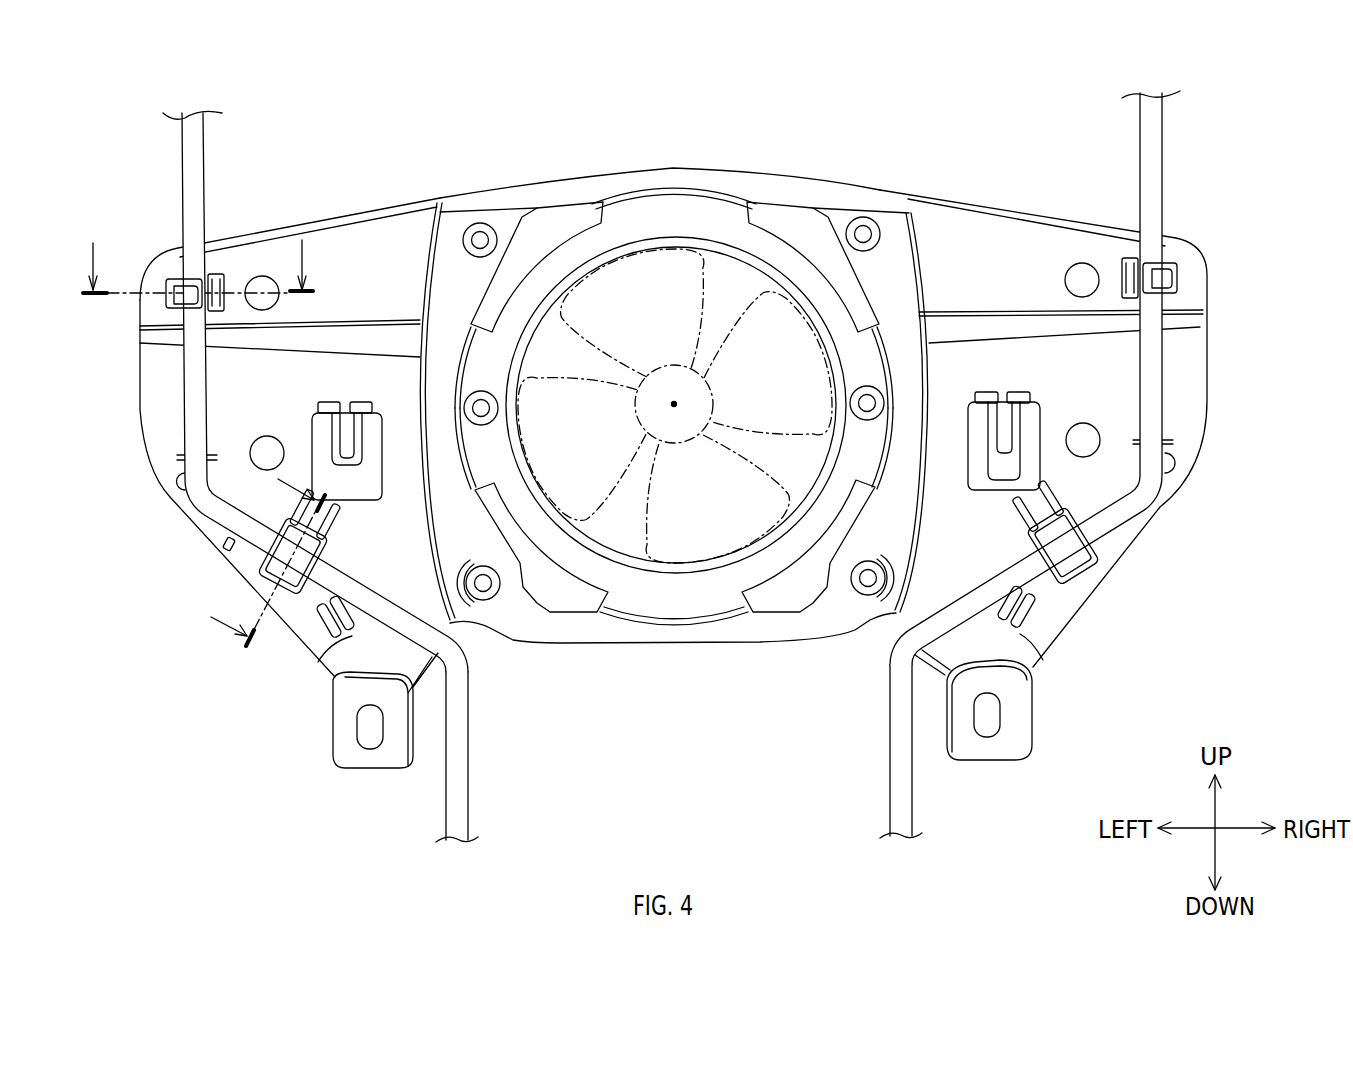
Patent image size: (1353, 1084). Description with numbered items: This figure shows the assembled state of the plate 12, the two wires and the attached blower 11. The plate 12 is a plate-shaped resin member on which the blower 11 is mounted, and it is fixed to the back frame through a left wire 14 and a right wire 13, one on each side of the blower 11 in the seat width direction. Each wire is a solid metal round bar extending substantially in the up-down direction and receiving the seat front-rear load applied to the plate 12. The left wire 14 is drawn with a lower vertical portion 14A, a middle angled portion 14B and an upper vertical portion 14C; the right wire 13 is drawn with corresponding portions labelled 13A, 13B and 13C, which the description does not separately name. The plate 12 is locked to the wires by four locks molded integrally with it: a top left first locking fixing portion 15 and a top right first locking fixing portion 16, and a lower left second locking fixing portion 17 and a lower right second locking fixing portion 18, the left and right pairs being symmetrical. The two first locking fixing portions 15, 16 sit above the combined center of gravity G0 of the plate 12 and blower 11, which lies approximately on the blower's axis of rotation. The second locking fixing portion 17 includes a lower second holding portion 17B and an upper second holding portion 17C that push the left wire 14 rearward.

The blower 11 is at (712, 562).
The plate 12 is at (828, 178).
The right wire 13 is at (1150, 505).
The right leg portion 13A is at (905, 790).
The right bracket portion 13B is at (1035, 580).
The right upper pipe portion 13C is at (1165, 380).
The left wire 14 is at (182, 497).
The lower vertical portion 14A is at (450, 797).
The middle angled portion 14B is at (328, 648).
The upper vertical portion 14C is at (180, 400).
The left first locking fixing portion 15 is at (180, 283).
The right first locking fixing portion 16 is at (1170, 268).
The left second locking fixing portion 17 is at (256, 578).
The lower second holding portion 17B is at (345, 628).
The upper second holding portion 17C is at (223, 540).
The right second locking fixing portion 18 is at (1085, 570).
The combined center of gravity G0 is at (674, 404).